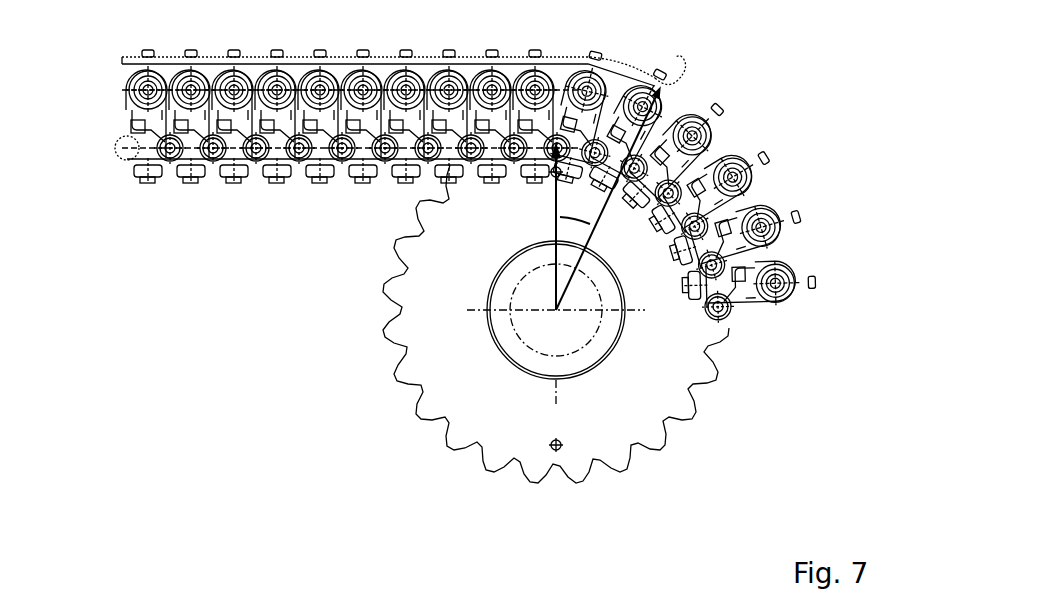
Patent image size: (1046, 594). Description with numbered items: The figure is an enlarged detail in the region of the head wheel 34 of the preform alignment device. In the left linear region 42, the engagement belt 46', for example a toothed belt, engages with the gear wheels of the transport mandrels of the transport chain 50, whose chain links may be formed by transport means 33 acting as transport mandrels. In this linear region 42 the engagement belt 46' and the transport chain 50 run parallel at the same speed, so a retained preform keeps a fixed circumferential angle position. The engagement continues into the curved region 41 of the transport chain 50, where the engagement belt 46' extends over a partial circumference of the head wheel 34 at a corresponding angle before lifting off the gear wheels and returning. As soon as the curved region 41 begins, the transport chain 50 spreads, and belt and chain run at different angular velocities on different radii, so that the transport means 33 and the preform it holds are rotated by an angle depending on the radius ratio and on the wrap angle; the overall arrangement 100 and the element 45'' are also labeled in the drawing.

The conveyor arrangement 100 is at (290, 356).
The curved region 41 is at (802, 145).
The linear region 42 is at (175, 215).
The engagement belt 46' is at (656, 42).
The transport chain 50 is at (340, 226).
The transport means 33 is at (733, 175).
The head wheel 34 is at (677, 377).
The guide element 45'' is at (136, 565).